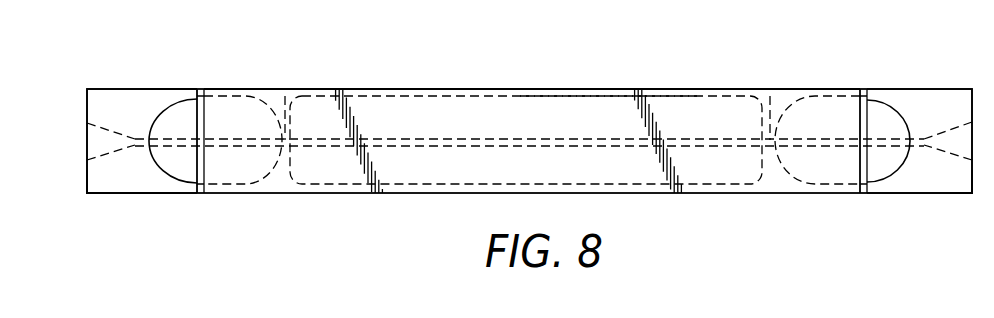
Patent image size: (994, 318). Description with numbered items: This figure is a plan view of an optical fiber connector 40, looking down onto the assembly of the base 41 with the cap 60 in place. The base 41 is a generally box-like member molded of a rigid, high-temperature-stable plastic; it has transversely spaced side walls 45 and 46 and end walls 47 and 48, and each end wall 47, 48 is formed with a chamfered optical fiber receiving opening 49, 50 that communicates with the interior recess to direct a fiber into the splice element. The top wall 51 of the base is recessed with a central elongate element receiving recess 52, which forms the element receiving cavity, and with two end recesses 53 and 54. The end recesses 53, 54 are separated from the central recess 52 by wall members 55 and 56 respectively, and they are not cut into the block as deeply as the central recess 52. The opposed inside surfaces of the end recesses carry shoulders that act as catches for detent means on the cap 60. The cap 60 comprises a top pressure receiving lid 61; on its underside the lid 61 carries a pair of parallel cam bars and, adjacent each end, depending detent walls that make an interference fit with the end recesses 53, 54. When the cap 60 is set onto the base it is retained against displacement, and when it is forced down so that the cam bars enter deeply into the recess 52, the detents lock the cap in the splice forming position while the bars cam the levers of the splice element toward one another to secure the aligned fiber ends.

The optical fiber connector 40 is at (378, 197).
The base 41 is at (125, 89).
The side wall 45 is at (143, 195).
The side wall 46 is at (157, 87).
The end wall 47 is at (87, 185).
The end wall 48 is at (972, 188).
The optical fiber receiving opening 49 is at (87, 127).
The optical fiber receiving opening 50 is at (950, 153).
The top wall 51 is at (930, 95).
The central elongate element receiving recess 52 is at (585, 103).
The end recess 53 is at (181, 180).
The end recess 54 is at (882, 112).
The wall member 55 is at (283, 98).
The wall member 56 is at (770, 98).
The cap 60 is at (447, 89).
The top pressure receiving lid 61 is at (487, 113).